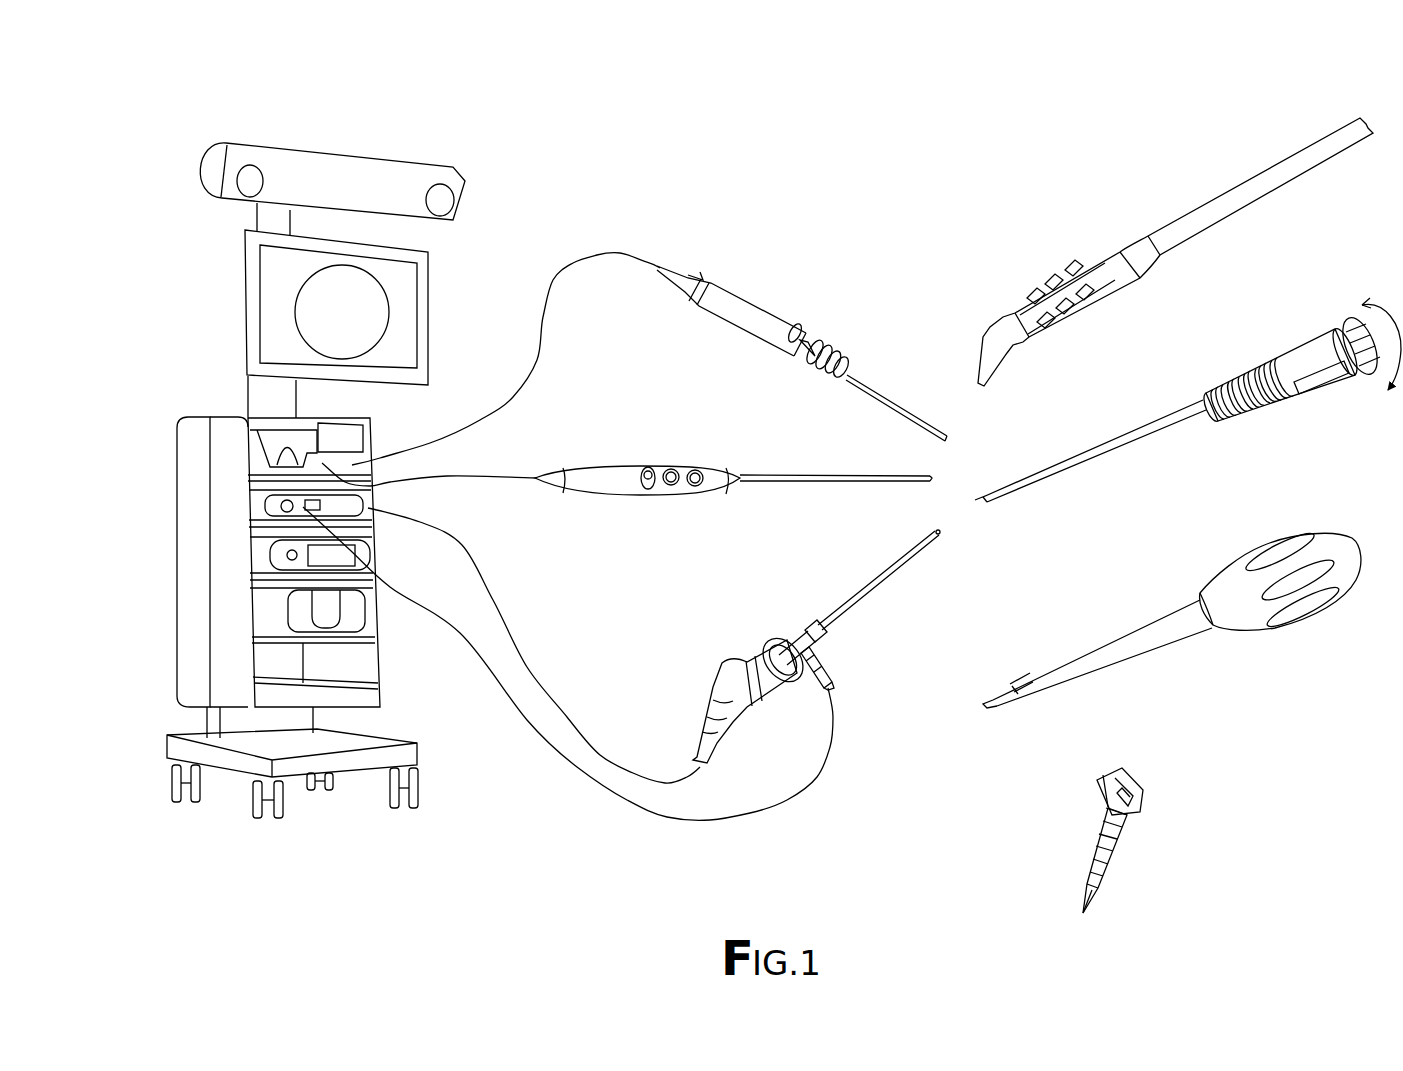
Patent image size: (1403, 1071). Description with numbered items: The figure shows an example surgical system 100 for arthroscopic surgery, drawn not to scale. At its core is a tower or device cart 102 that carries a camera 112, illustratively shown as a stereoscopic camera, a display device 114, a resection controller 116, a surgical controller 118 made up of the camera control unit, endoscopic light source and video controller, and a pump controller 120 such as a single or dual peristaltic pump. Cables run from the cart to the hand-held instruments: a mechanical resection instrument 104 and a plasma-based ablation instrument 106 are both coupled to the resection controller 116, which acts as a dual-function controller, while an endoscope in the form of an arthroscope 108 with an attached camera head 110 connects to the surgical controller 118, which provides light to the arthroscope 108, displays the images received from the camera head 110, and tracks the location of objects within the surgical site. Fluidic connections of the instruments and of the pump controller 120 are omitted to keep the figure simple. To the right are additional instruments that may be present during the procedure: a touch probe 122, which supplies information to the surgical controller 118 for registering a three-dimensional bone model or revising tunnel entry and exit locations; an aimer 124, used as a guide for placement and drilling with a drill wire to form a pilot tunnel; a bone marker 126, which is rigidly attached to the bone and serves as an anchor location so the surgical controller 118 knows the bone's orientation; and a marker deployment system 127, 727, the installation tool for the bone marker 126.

The surgical system 100 is at (1006, 106).
The device cart 102 is at (172, 138).
The mechanical resection instrument 104 is at (835, 326).
The ablation instrument 106 is at (620, 452).
The arthroscope 108 is at (822, 612).
The camera head 110 is at (710, 683).
The camera 112 is at (385, 172).
The display device 114 is at (262, 314).
The resection controller 116 is at (258, 458).
The surgical controller 118 is at (265, 508).
The pump controller 120 is at (270, 617).
The touch probe 122 is at (1075, 232).
The aimer 124 is at (1183, 594).
The bone marker 126 is at (1135, 840).
The marker deployment system 127 is at (1183, 398).
The marker deployment system 727 is at (1260, 547).